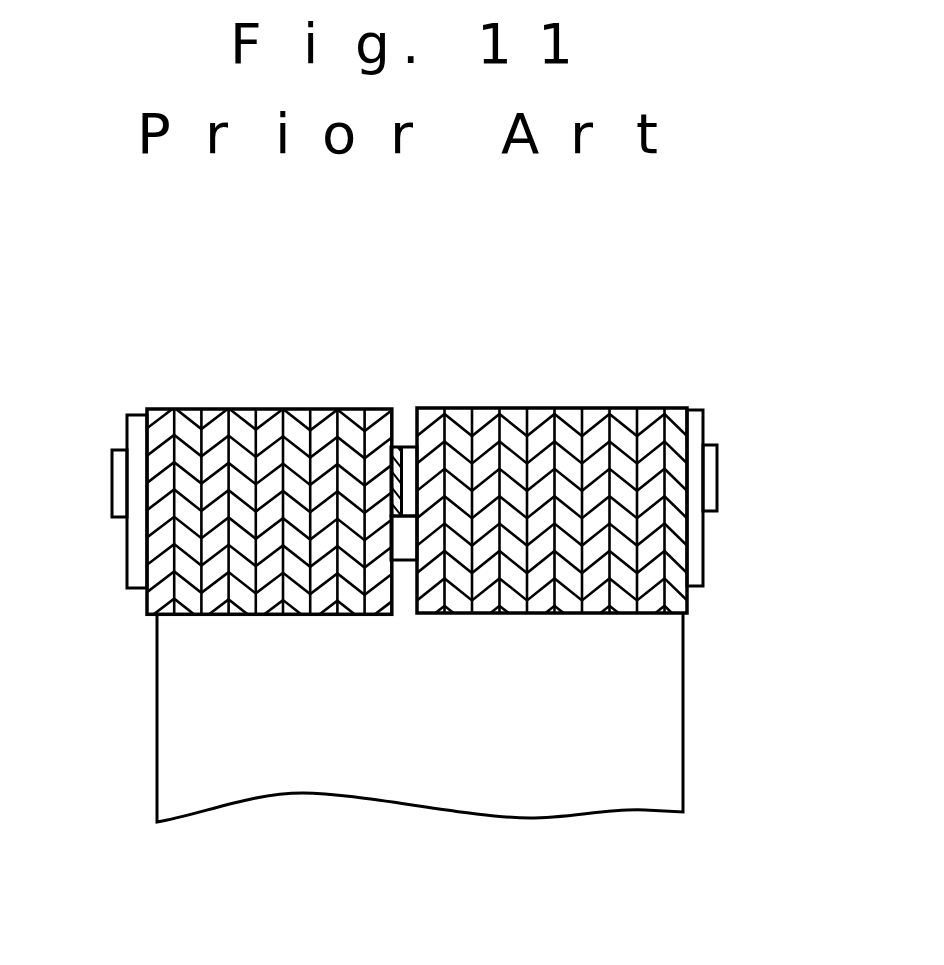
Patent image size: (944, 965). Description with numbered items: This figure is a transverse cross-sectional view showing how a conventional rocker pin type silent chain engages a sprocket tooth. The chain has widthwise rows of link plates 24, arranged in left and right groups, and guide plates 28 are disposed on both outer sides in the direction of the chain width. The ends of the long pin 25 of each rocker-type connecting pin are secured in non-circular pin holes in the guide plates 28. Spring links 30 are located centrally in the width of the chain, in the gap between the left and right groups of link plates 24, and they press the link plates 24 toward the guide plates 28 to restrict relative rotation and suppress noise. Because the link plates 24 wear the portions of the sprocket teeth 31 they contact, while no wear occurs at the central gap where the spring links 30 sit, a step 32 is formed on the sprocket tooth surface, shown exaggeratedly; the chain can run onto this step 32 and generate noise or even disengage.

The link plates 24 is at (300, 423).
The long pin 25 is at (718, 478).
The guide plates 28 is at (136, 416).
The spring links 30 is at (400, 443).
The sprocket teeth 31 is at (665, 700).
The step 32 is at (402, 582).